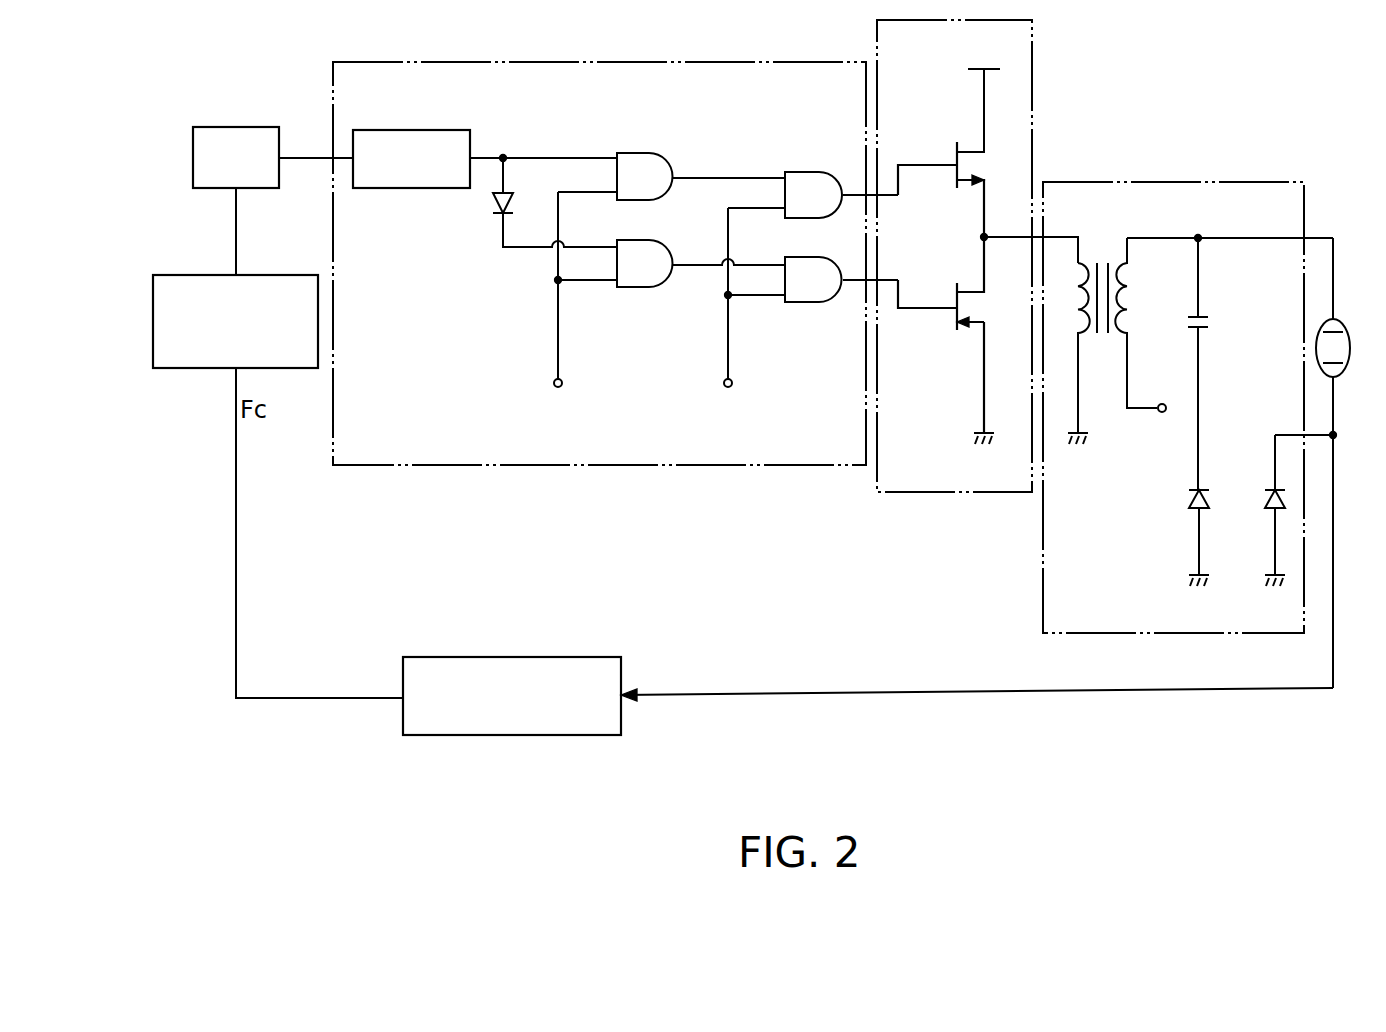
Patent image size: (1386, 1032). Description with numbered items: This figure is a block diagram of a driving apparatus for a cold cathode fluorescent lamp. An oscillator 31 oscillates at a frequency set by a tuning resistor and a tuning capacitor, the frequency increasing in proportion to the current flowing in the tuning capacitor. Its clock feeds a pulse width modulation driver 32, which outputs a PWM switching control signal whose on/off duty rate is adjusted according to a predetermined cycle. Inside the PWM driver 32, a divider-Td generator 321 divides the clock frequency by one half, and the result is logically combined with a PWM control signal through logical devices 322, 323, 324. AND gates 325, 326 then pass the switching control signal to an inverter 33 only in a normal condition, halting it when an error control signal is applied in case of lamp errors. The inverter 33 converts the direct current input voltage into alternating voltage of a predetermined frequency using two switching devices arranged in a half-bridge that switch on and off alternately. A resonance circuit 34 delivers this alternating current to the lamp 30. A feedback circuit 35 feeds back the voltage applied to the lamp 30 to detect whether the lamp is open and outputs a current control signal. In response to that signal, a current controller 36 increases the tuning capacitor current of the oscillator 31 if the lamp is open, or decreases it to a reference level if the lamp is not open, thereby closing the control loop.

The lamp 30 is at (1352, 343).
The oscillator 31 is at (248, 128).
The pulse width modulation (PWM) driver 32 is at (579, 465).
The divider-Td generator 321 is at (393, 190).
The logical device 322 is at (490, 203).
The logical device 323 is at (655, 152).
The logical device 324 is at (643, 288).
The AND gate 325 is at (804, 170).
The AND gate 326 is at (807, 303).
The inverter 33 is at (912, 492).
The resonance circuit 34 is at (1043, 610).
The feedback circuit 35 is at (548, 735).
The current controller 36 is at (173, 368).